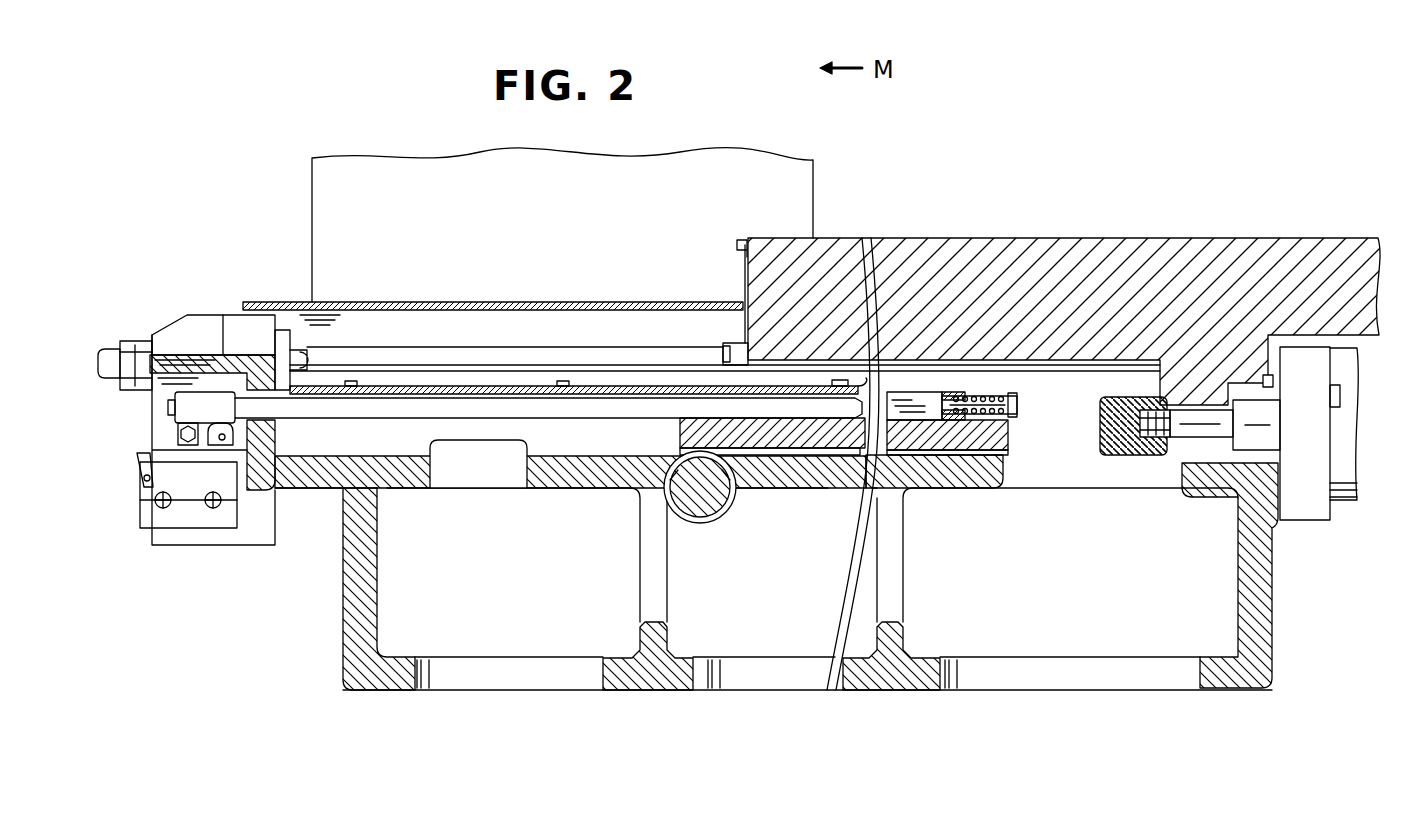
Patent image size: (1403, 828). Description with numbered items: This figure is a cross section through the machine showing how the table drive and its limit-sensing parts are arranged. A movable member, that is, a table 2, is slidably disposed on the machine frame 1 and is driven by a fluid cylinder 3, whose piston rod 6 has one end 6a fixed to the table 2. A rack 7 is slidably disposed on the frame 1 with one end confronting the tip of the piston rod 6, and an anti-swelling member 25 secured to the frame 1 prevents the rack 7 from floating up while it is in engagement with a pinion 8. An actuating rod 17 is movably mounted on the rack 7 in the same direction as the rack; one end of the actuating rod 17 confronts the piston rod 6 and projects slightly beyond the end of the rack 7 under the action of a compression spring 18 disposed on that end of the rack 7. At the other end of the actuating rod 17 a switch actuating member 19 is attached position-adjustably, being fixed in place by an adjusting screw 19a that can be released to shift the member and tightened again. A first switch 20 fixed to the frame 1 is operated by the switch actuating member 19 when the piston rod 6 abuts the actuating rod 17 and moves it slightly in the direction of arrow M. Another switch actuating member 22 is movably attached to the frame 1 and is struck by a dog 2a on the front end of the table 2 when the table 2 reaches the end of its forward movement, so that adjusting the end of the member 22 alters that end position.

The machine frame 1 is at (776, 593).
The movable member 2 is at (1072, 240).
The dog 2a is at (738, 345).
The fluid cylinder 3 is at (1305, 526).
The piston rod 6 is at (1265, 430).
The end of piston rod 6a is at (1128, 456).
The rack 7 is at (1005, 440).
The pinion 8 is at (707, 505).
The actuating rod 17 is at (594, 410).
The compression spring 18 is at (1002, 392).
The switch actuating member 19 is at (185, 420).
The adjusting screw 19a is at (180, 432).
The first switch 20 is at (150, 490).
The switch actuating member 22 is at (305, 352).
The anti-swelling member 25 is at (485, 386).